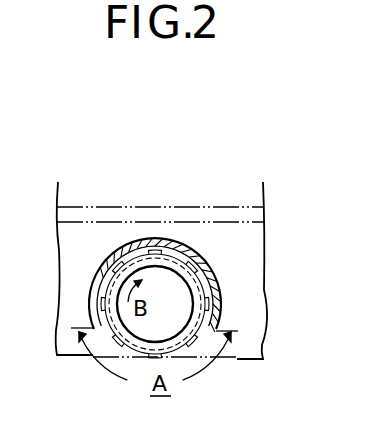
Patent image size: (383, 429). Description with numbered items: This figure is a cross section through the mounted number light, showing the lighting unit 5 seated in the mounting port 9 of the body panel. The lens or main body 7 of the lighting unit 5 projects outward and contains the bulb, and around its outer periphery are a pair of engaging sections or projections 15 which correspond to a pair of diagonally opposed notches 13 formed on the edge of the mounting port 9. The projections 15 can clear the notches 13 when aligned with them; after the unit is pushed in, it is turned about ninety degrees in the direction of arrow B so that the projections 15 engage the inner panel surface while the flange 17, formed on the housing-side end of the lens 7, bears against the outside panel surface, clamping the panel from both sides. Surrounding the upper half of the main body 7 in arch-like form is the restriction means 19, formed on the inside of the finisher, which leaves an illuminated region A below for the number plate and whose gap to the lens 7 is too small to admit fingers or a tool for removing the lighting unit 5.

The lighting unit 5 is at (186, 298).
The main body or lens 7 is at (183, 313).
The mounting port 9 is at (93, 278).
The notches 13 is at (115, 250).
The engaging sections or projections 15 is at (179, 250).
The flange 17 is at (148, 247).
The restriction means 19 is at (208, 263).